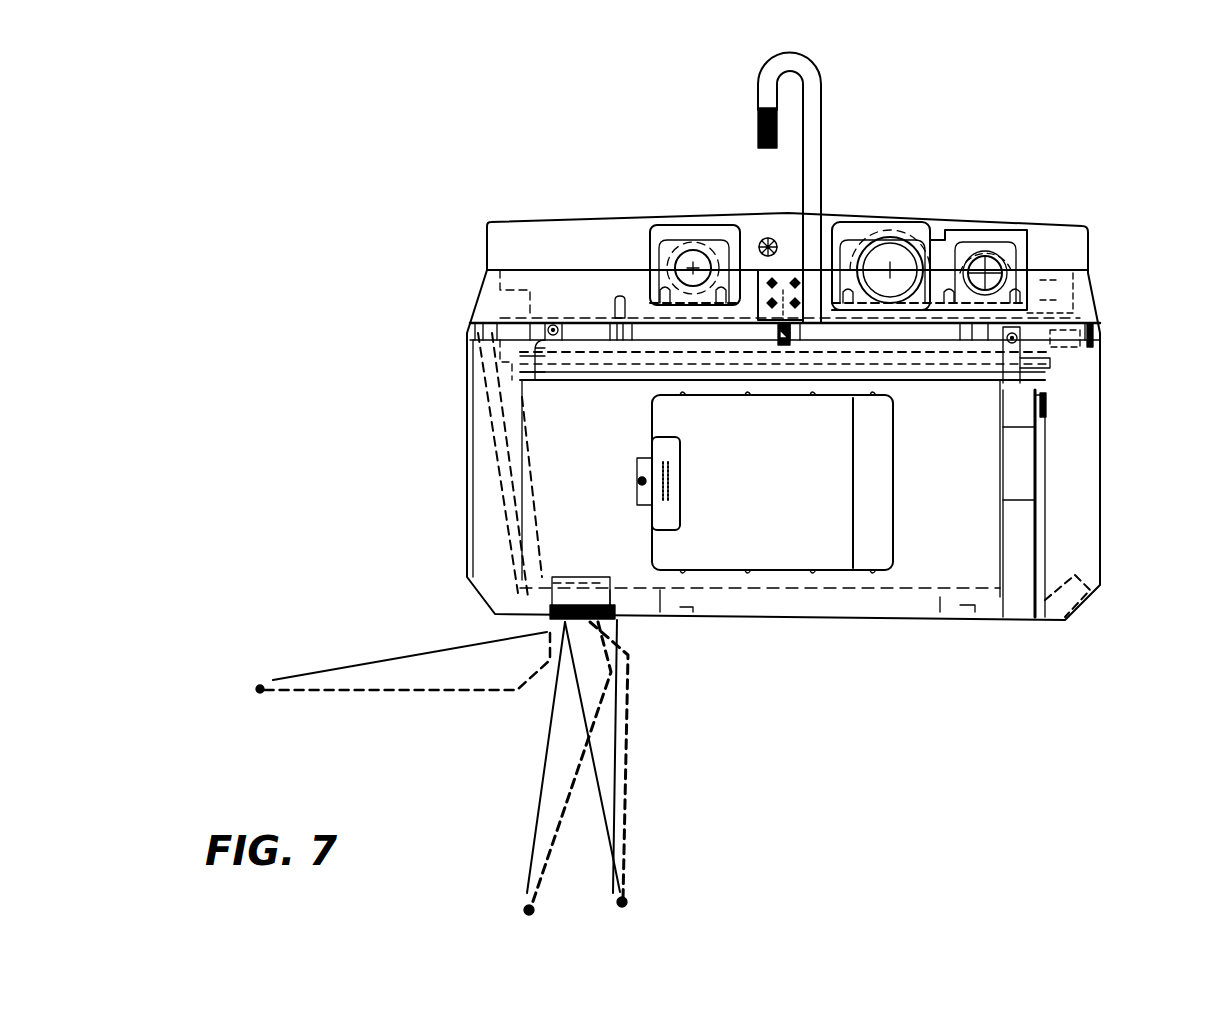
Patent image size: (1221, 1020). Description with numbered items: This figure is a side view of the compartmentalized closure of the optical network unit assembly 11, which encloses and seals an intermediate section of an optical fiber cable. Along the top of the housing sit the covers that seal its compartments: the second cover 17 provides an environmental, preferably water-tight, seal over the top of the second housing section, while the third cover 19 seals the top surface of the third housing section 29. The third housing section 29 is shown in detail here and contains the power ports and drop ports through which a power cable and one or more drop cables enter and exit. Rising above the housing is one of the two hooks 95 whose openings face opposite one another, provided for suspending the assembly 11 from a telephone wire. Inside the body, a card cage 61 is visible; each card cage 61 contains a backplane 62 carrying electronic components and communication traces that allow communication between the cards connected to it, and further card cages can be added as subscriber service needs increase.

The optical network unit assembly 11 is at (467, 86).
The second cover 17 is at (660, 213).
The third cover 19 is at (978, 215).
The third housing section 29 is at (1000, 233).
The hook 95 is at (815, 60).
The card cage 61 is at (708, 545).
The backplane 62 is at (1045, 500).